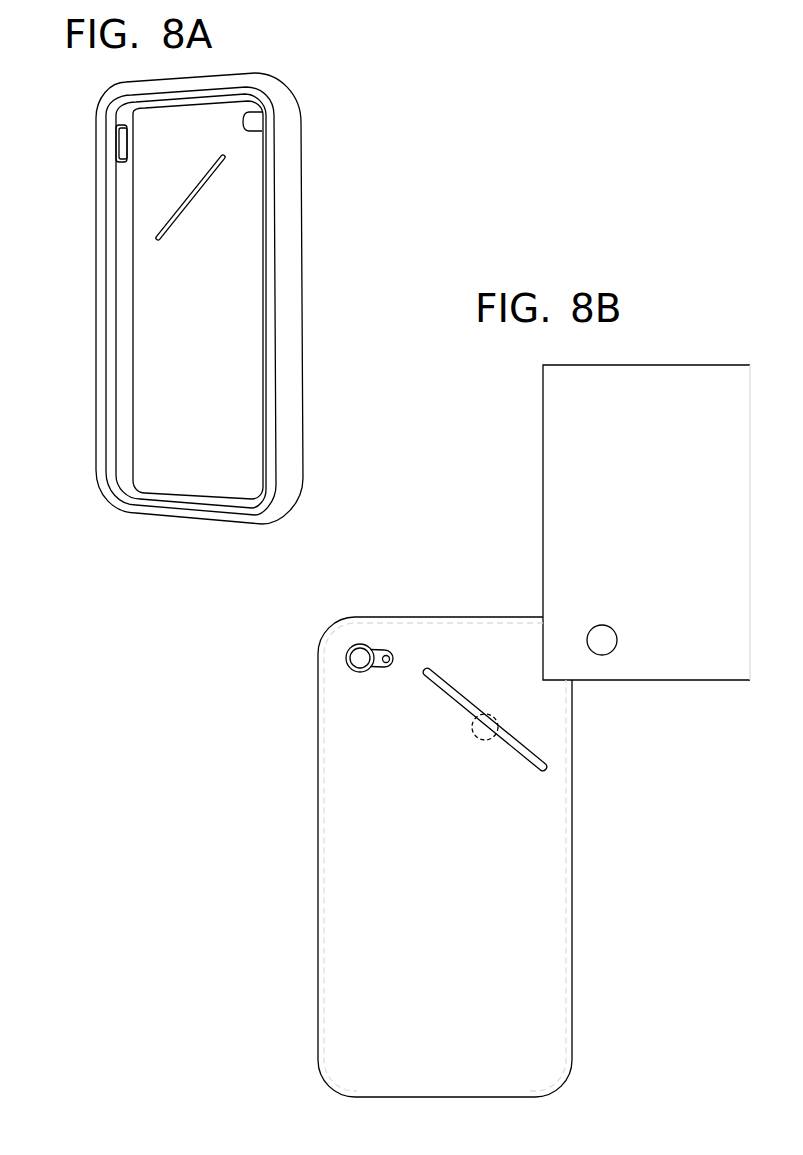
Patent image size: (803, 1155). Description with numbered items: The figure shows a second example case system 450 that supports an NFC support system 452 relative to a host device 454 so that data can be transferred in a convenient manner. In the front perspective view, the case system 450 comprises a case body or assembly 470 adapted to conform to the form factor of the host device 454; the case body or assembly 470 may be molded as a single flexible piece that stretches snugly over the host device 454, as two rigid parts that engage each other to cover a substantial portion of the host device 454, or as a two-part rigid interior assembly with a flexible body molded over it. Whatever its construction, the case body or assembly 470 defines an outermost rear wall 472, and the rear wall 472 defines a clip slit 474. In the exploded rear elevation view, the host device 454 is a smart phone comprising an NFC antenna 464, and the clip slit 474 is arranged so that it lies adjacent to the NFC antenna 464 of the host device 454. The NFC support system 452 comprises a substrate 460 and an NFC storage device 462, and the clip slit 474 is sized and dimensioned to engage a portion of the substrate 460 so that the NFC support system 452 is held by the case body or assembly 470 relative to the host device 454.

In FIG. 8A, the case system 450 is at (216, 298).
In FIG. 8B, the case system 450 is at (475, 828).
In FIG. 8A, the case body or assembly 470 is at (288, 218).
In FIG. 8A, the rear wall 472 is at (162, 294).
In FIG. 8B, the rear wall 472 is at (518, 818).
In FIG. 8A, the clip slit 474 is at (180, 208).
In FIG. 8B, the clip slit 474 is at (520, 748).
In FIG. 8B, the NFC support system 452 is at (607, 544).
In FIG. 8B, the substrate 460 is at (553, 478).
In FIG. 8B, the NFC storage device 462 is at (603, 656).
In FIG. 8B, the NFC antenna 464 is at (476, 740).
In FIG. 8B, the host device 454 is at (393, 622).